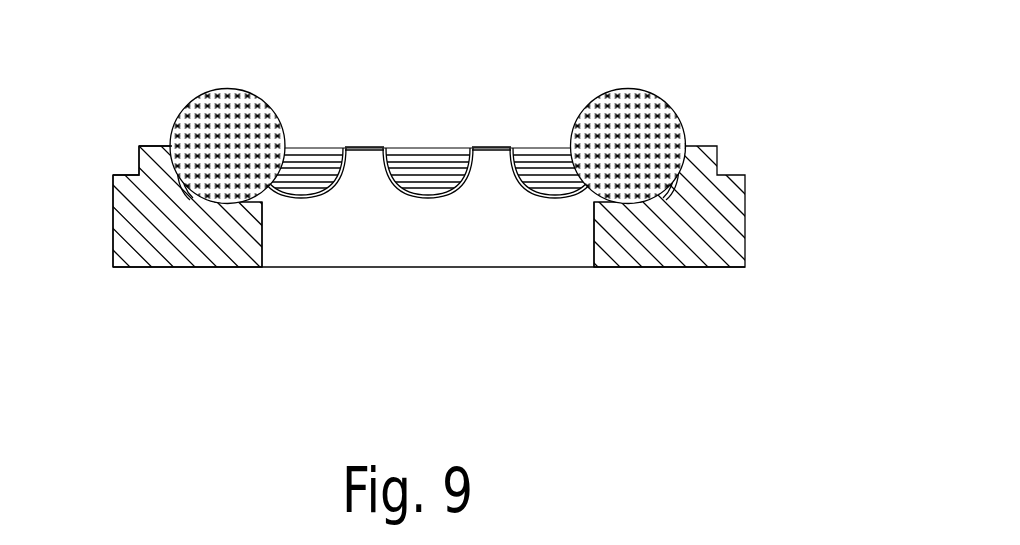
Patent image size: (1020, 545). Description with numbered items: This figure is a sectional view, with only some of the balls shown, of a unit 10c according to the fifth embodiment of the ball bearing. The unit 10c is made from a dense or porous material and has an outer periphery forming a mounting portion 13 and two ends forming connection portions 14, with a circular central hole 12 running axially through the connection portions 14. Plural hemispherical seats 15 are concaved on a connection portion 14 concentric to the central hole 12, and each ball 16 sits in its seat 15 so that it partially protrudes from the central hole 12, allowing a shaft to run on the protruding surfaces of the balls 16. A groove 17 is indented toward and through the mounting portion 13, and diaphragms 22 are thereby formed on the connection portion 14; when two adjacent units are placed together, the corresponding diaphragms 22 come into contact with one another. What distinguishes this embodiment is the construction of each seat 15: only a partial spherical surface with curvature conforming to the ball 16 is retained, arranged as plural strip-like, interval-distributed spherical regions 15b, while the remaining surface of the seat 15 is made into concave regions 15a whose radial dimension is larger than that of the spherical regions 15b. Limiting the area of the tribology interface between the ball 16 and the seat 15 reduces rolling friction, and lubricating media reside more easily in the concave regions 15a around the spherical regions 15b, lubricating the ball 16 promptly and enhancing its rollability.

The unit 10c is at (655, 282).
The central hole 12 is at (378, 242).
The mounting portion 13 is at (113, 226).
The connection portion 14 is at (503, 147).
The seat 15 is at (435, 200).
The concave region 15a is at (398, 170).
The spherical region 15b is at (440, 180).
The ball 16 is at (256, 128).
The groove 17 is at (125, 165).
The diaphragm 22 is at (152, 145).